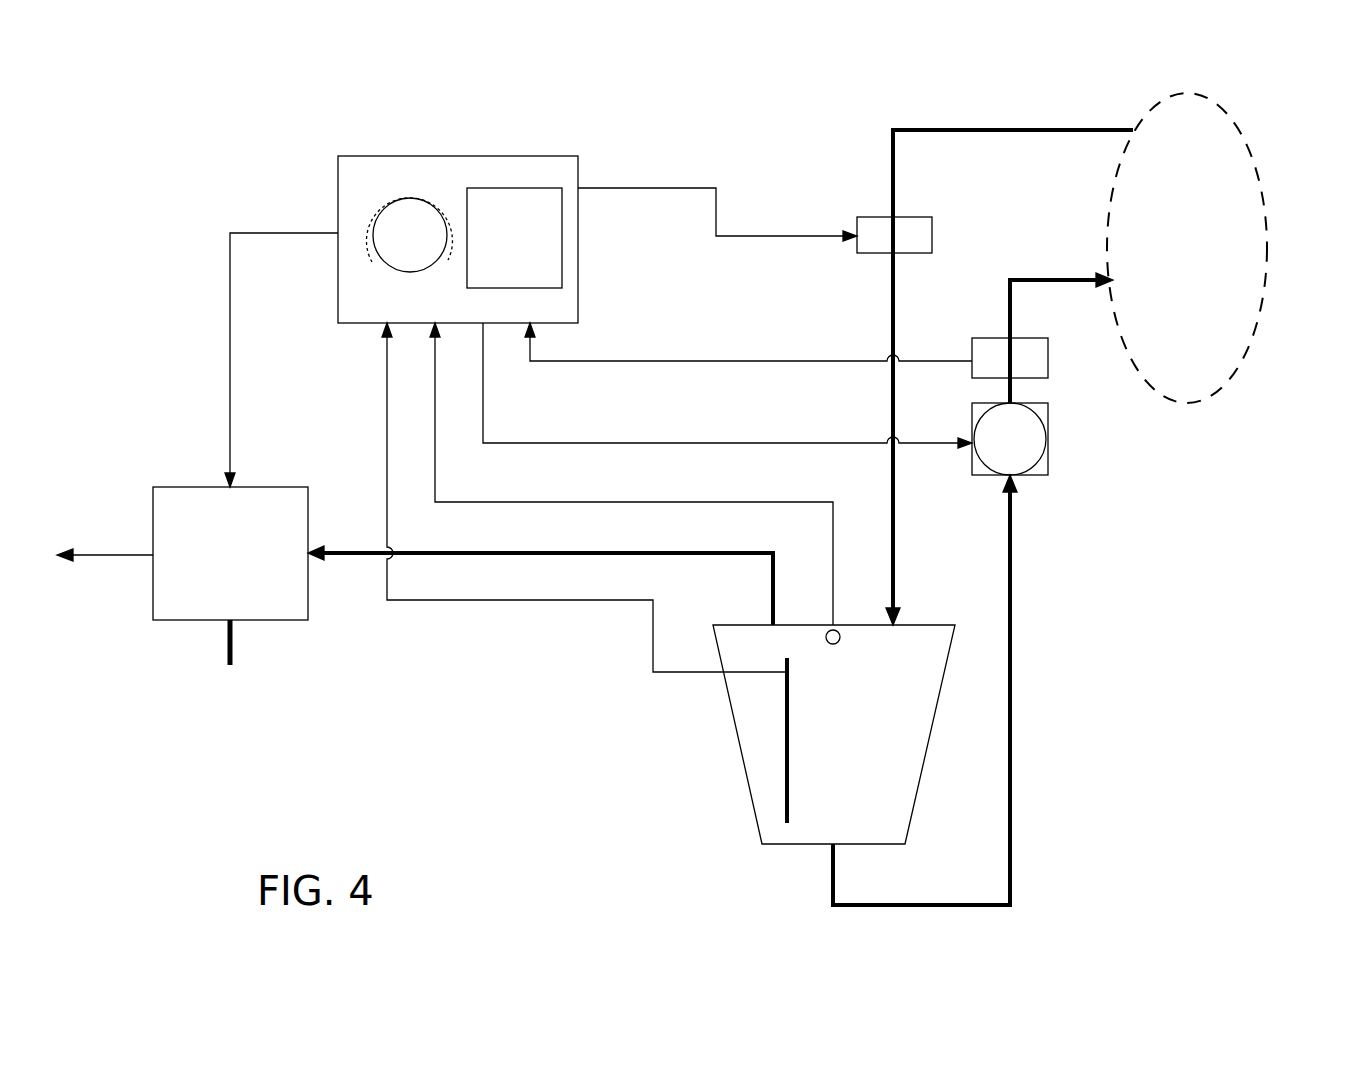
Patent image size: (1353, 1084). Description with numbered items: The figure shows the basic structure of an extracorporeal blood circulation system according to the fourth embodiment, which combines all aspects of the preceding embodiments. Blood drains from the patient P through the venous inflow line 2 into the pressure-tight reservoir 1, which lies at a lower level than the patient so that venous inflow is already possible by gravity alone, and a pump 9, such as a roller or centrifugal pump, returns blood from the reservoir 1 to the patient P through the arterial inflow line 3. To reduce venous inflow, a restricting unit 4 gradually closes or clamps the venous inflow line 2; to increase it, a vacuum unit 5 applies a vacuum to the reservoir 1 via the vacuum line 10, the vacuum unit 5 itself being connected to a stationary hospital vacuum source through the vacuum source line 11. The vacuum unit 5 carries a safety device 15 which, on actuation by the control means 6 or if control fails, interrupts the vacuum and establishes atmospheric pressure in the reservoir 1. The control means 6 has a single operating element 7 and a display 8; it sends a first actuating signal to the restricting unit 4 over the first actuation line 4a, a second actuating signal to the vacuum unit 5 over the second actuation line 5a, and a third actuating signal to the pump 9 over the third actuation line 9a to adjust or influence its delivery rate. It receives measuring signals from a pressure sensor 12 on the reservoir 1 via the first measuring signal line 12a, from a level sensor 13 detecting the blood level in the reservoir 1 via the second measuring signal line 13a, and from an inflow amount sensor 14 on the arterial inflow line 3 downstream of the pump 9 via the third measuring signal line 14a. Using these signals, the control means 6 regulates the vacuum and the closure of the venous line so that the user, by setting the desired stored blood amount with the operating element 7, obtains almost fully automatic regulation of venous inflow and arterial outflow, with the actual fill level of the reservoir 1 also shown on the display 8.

The reservoir 1 is at (766, 792).
The venous inflow line 2 is at (975, 132).
The arterial inflow line 3 is at (1012, 660).
The restricting unit 4 is at (915, 236).
The first actuation line 4a is at (716, 210).
The vacuum unit 5 is at (168, 609).
The second actuation line 5a is at (230, 298).
The control means 6 is at (540, 166).
The operating element 7 is at (388, 228).
The display 8 is at (562, 210).
The pump 9 is at (1025, 440).
The third actuation line 9a is at (572, 443).
The vacuum line 10 is at (345, 557).
The vacuum source line 11 is at (105, 554).
The pressure sensor 12 is at (833, 645).
The first measuring signal line 12a is at (622, 502).
The level sensor 13 is at (790, 750).
The second measuring signal line 13a is at (640, 598).
The inflow amount sensor 14 is at (1048, 345).
The third measuring signal line 14a is at (640, 361).
The safety device 15 is at (236, 657).
The patient P is at (1228, 327).